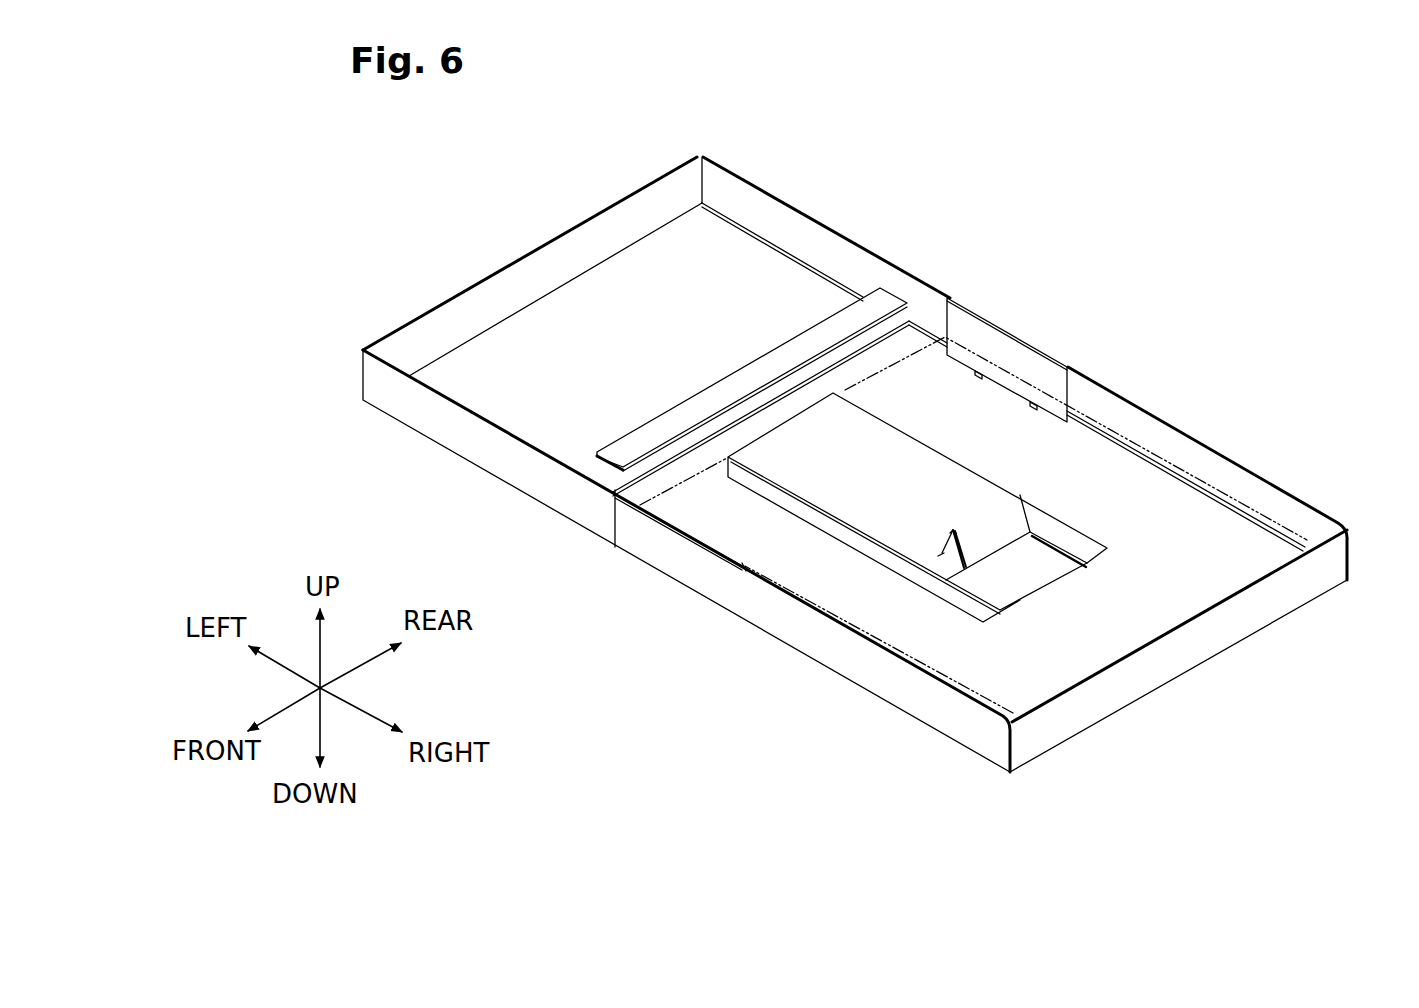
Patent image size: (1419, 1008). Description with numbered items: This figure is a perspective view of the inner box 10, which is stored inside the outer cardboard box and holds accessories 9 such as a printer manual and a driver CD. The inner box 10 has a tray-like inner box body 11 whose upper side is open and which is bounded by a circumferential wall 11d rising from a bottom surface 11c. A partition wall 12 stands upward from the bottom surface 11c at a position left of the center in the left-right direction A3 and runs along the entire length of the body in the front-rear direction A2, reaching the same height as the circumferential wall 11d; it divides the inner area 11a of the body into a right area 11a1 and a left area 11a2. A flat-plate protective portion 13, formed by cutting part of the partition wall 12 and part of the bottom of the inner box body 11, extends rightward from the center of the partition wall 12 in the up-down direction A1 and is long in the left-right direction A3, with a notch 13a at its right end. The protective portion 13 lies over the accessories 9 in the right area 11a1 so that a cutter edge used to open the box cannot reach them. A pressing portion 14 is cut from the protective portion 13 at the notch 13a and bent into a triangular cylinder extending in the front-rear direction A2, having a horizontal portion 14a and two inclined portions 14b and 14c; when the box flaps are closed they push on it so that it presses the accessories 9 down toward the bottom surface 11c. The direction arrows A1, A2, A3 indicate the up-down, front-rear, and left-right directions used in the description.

The accessories 9 is at (1133, 433).
The inner box 10 is at (1158, 261).
The inner box body 11 is at (796, 187).
The inner area 11a is at (698, 250).
The right area 11a1 is at (1302, 533).
The left area 11a2 is at (477, 317).
The bottom surface 11c is at (555, 400).
The circumferential wall 11d is at (1247, 613).
The partition wall 12 is at (905, 338).
The protective portion 13 is at (867, 517).
The notch 13a is at (1066, 553).
The pressing portion 14 is at (998, 818).
The horizontal portion 14a is at (960, 552).
The inclined portion 14b is at (968, 553).
The inclined portion 14c is at (942, 552).
The up-down direction A1 is at (321, 715).
The front-rear direction A2 is at (358, 670).
The left-right direction A3 is at (282, 665).